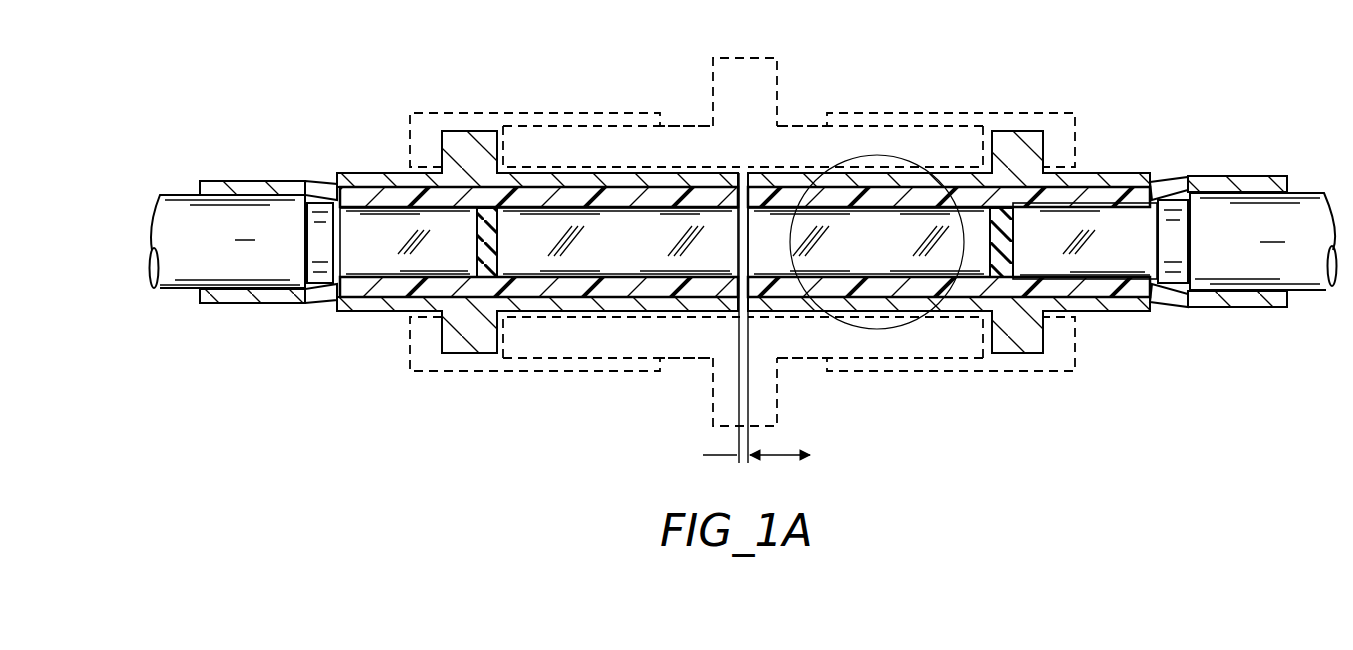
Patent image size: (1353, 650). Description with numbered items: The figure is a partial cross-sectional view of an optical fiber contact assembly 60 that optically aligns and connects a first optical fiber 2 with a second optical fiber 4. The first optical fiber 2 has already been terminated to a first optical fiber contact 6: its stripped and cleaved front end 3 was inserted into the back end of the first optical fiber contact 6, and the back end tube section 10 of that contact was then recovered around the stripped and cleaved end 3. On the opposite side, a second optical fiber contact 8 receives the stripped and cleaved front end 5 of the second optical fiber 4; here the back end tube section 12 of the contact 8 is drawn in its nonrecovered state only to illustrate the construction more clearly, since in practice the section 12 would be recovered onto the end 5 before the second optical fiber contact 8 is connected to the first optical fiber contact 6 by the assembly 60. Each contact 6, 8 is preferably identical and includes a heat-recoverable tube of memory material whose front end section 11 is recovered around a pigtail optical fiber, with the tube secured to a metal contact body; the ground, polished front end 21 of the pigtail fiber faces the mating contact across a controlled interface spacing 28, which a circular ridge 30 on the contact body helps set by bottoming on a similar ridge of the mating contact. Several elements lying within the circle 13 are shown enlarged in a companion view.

The first optical fiber 2 is at (183, 300).
The second optical fiber 4 is at (1307, 298).
The stripped and cleaved front end of the first optical fiber 3 is at (363, 252).
The stripped and cleaved front end of the second optical fiber 5 is at (1122, 250).
The first optical fiber contact 6 is at (522, 242).
The second optical fiber contact 8 is at (968, 242).
The back end tube section 10 is at (316, 188).
The back end tube section of the second contact 12 is at (1193, 183).
The front end section 11 is at (660, 195).
The circle 13 is at (913, 157).
The front end of the pigtail optical fiber 21 is at (727, 233).
The interface spacing 28 is at (771, 456).
The circular ridge 30 is at (743, 173).
The optical fiber contact assembly 60 is at (742, 254).